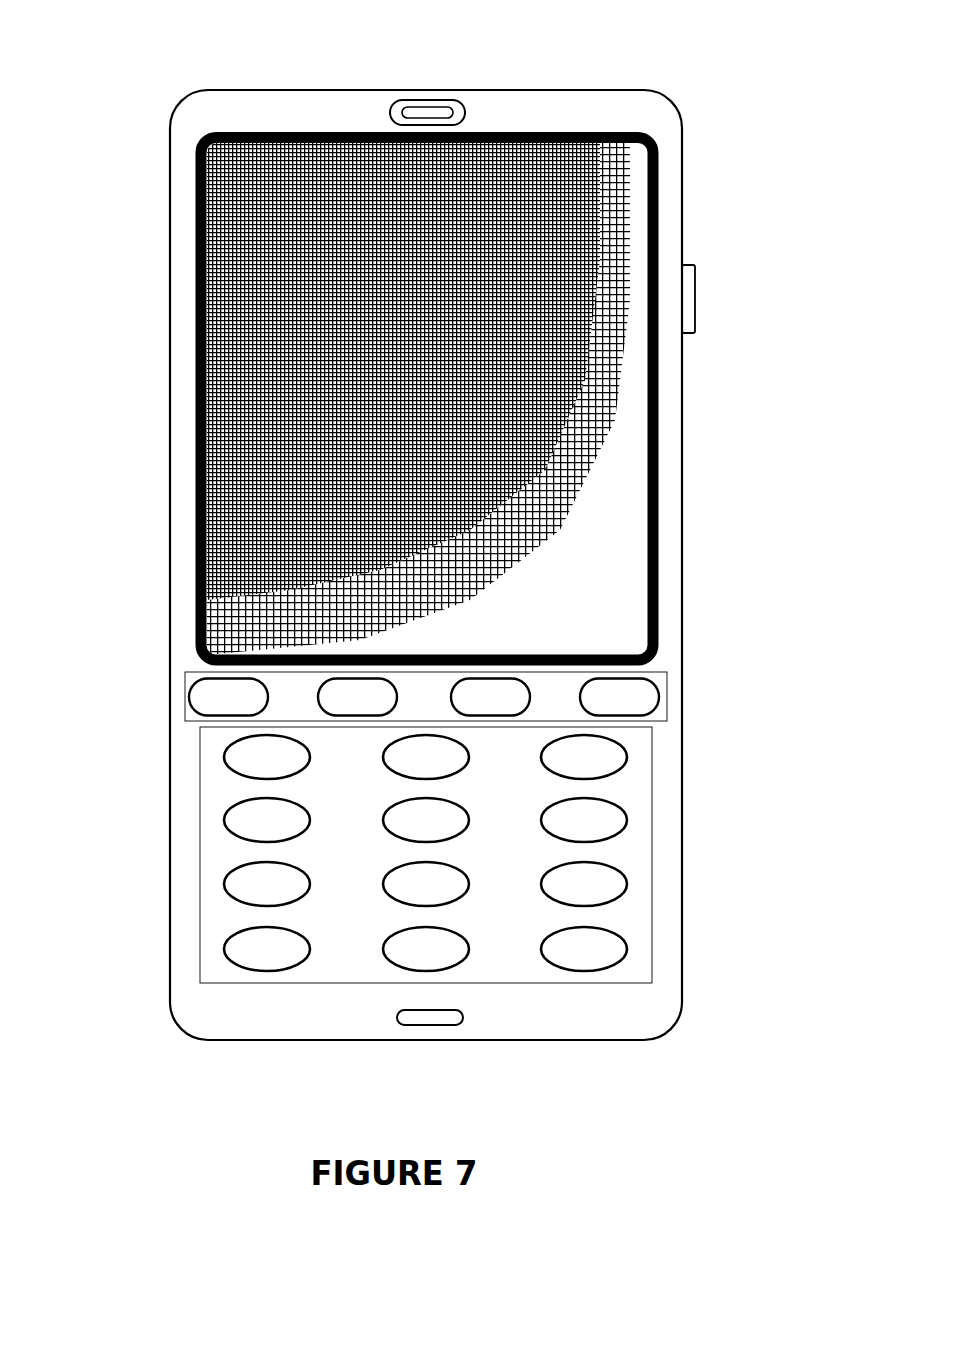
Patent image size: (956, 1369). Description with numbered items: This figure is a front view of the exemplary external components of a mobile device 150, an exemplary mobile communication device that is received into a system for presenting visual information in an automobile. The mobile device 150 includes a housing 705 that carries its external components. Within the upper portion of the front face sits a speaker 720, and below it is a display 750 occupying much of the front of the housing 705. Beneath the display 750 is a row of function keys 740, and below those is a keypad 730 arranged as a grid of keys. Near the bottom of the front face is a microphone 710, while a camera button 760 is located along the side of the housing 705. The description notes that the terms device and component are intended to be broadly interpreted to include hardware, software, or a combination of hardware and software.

The mobile device 150 is at (193, 57).
The housing 705 is at (169, 490).
The microphone 710 is at (450, 1025).
The speaker 720 is at (442, 99).
The keypad 730 is at (697, 745).
The function keys 740 is at (702, 673).
The display 750 is at (638, 418).
The camera button 760 is at (687, 298).